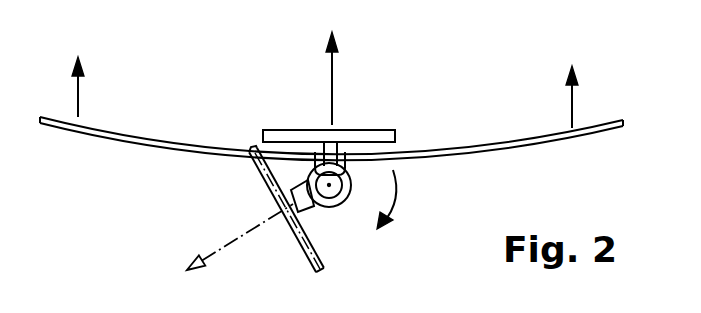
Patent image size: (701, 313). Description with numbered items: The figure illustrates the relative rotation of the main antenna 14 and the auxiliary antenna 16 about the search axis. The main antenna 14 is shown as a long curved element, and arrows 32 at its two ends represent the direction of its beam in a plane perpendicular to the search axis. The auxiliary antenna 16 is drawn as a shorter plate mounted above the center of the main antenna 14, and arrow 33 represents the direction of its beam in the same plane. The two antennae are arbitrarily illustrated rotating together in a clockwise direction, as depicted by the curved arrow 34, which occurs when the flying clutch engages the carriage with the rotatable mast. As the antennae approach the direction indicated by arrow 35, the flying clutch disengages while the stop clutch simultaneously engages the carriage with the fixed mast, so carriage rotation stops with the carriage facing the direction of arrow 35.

The main antenna 14 is at (150, 147).
The auxiliary antenna 16 is at (356, 133).
The arrows 32 is at (83, 92).
The arrow 33 is at (330, 77).
The arrow 34 is at (395, 186).
The arrow 35 is at (228, 245).